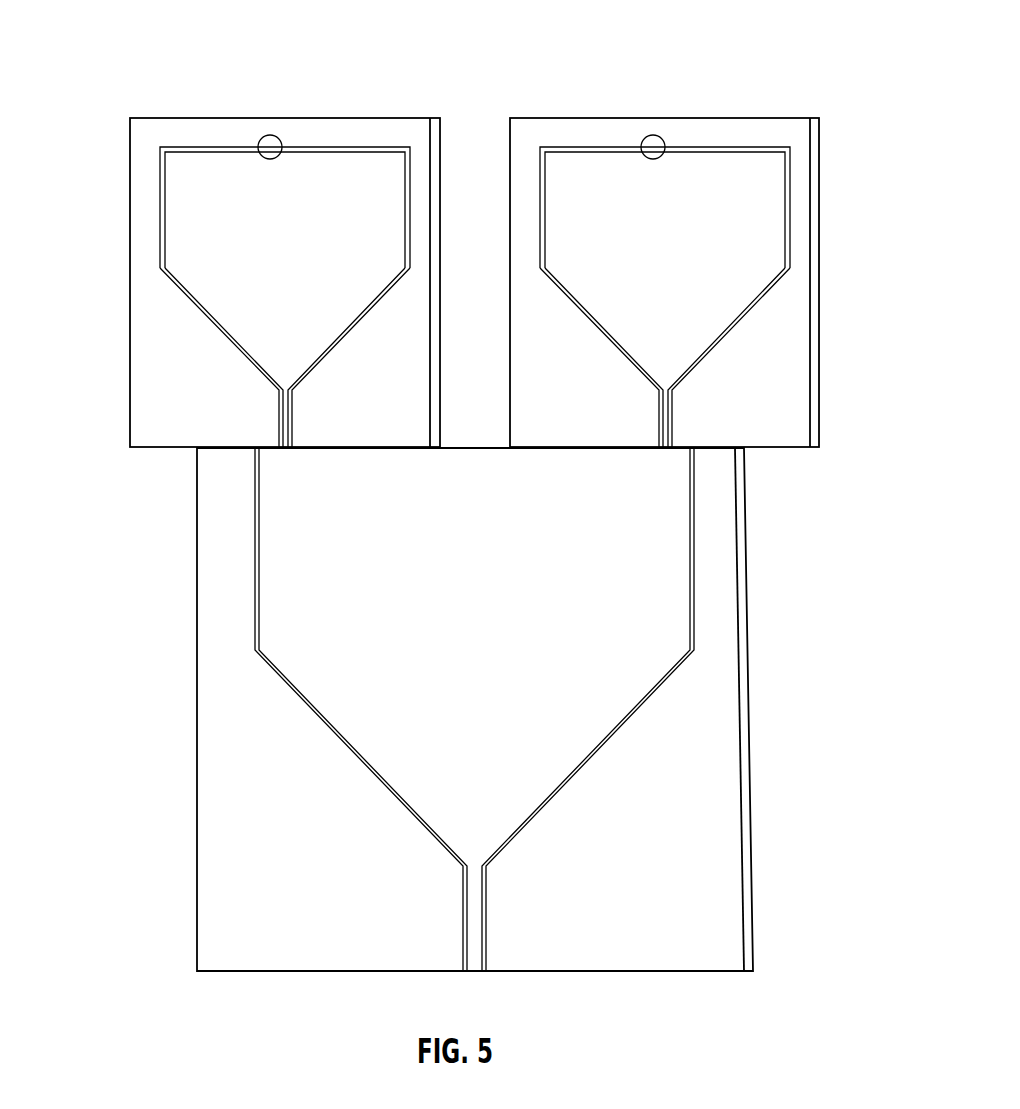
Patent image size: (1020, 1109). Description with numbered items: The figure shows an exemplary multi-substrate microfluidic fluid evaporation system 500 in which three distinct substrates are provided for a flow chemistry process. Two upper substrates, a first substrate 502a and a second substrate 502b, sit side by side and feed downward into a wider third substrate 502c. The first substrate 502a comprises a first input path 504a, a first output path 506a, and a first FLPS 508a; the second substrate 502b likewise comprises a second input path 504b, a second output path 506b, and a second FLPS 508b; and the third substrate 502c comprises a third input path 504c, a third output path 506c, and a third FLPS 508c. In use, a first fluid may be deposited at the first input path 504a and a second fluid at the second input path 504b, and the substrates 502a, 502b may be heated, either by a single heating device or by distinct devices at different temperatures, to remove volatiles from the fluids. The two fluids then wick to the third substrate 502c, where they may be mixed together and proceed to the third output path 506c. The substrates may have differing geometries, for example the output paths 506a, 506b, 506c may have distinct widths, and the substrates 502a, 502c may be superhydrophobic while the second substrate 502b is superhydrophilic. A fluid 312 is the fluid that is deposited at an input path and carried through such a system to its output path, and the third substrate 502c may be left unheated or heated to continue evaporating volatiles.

The multi-substrate microfluidic fluid evaporation system 500 is at (150, 46).
The fluid 312 is at (268, 138).
The first substrate 502a is at (126, 212).
The second substrate 502b is at (822, 218).
The third substrate 502c is at (195, 576).
The first input path 504a is at (175, 147).
The second input path 504b is at (723, 132).
The third input path 504c is at (492, 445).
The first output path 506a is at (276, 413).
The second output path 506b is at (677, 418).
The third output path 506c is at (488, 918).
The first FLPS 508a is at (396, 160).
The second FLPS 508b is at (553, 162).
The third FLPS 508c is at (672, 577).